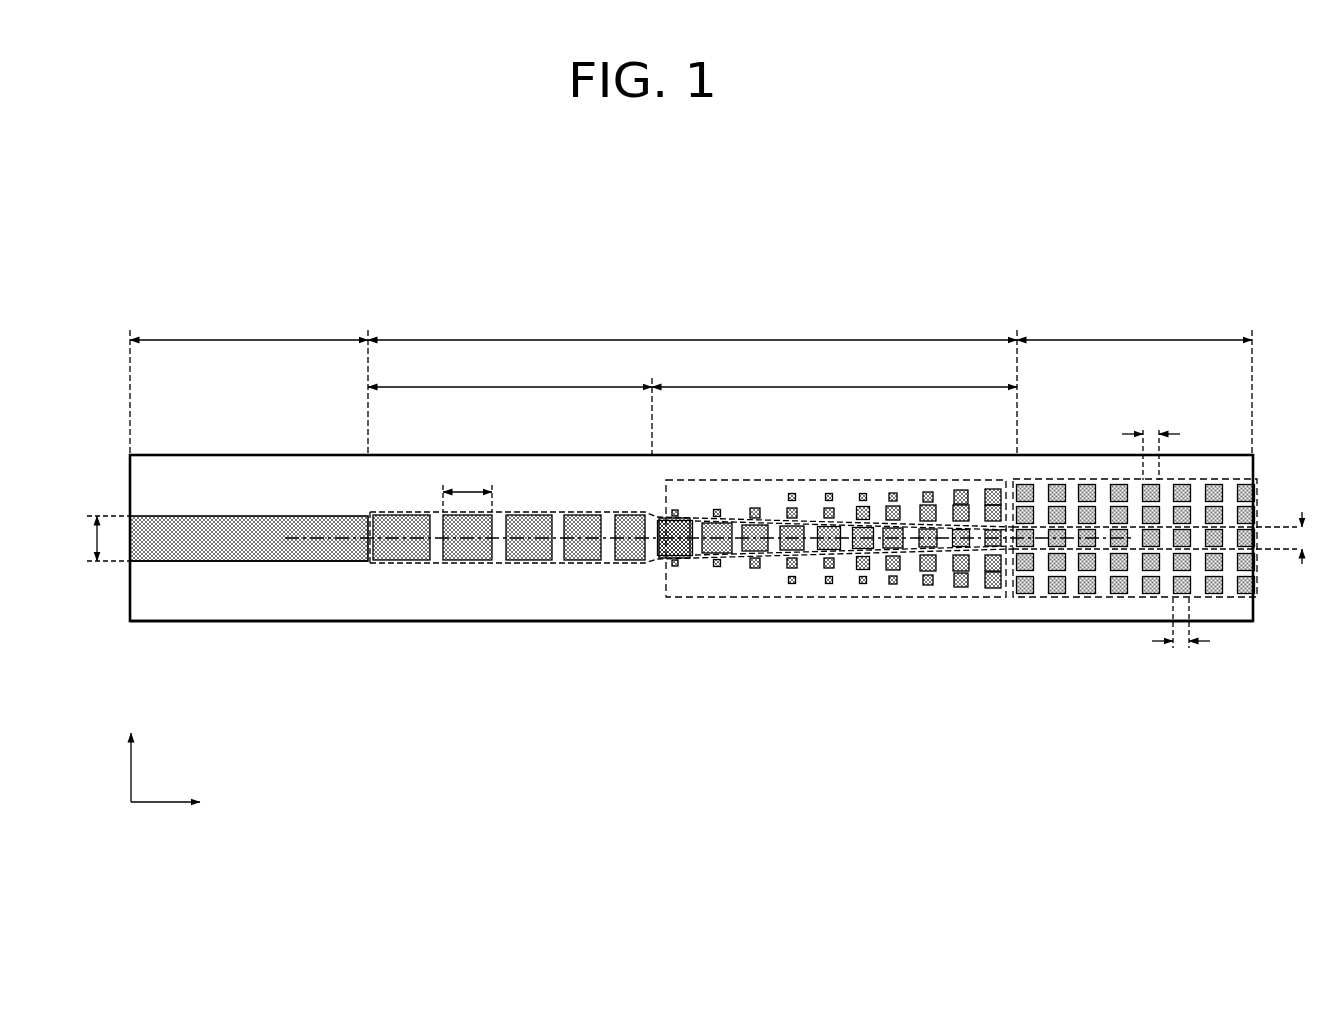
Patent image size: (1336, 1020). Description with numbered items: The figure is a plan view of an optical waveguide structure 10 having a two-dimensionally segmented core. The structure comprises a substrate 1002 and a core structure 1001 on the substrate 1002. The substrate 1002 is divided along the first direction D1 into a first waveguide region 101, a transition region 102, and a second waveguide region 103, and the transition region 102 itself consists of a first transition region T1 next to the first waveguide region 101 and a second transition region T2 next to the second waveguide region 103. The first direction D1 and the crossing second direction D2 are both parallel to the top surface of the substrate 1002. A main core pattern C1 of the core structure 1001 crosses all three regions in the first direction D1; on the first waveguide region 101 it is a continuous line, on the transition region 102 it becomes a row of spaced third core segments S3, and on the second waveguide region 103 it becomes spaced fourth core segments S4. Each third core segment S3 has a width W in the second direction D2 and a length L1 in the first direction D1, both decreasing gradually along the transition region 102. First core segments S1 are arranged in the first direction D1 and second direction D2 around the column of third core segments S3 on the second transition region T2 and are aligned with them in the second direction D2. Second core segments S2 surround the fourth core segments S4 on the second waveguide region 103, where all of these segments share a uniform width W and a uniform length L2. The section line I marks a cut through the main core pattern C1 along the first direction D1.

The optical waveguide structure 10 is at (1242, 276).
The first waveguide region 101 is at (249, 383).
The transition region 102 is at (692, 383).
The second waveguide region 103 is at (1134, 383).
The core structure 1001 is at (343, 566).
The substrate 1002 is at (445, 612).
The main core pattern C1 is at (205, 558).
The first core segments S1 is at (852, 480).
The second core segments S2 is at (1070, 480).
The third core segments S3 is at (555, 566).
The fourth core segments S4 is at (1260, 542).
The first transition region T1 is at (510, 406).
The second transition region T2 is at (834, 372).
The length L1 is at (467, 487).
The length L2 is at (1166, 539).
The width W is at (700, 538).
The section line I-I' I is at (282, 540).
The first direction D1 is at (180, 804).
The second direction D2 is at (129, 753).